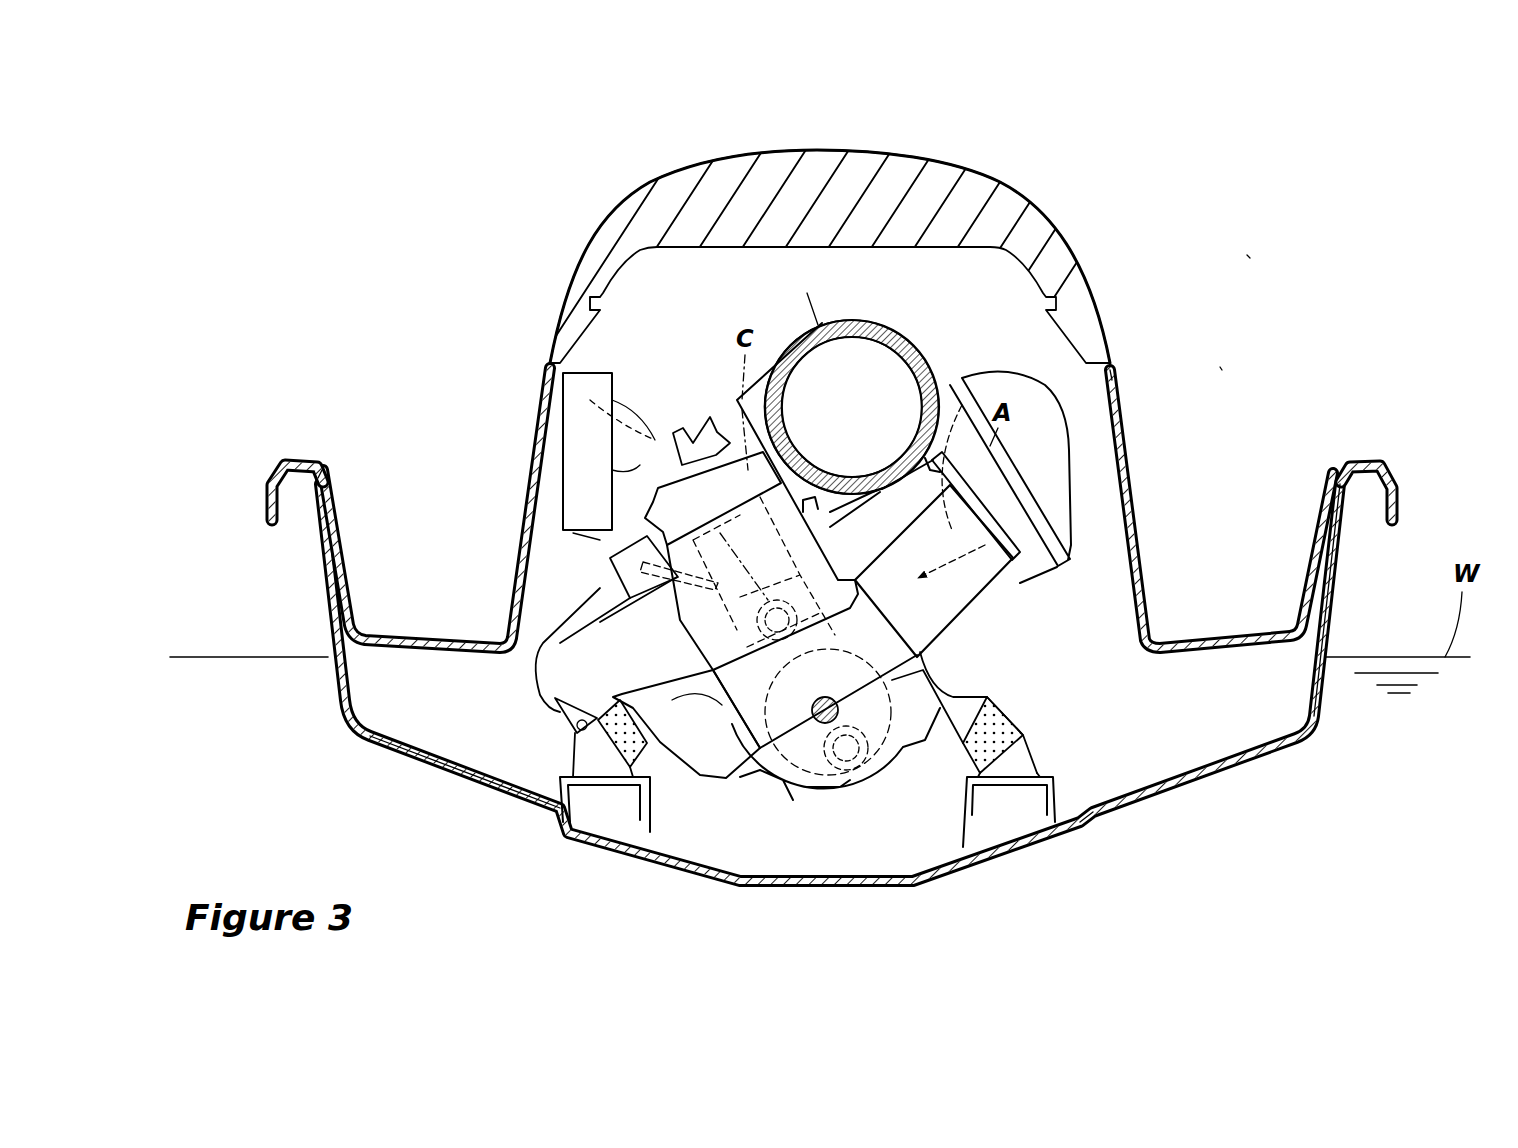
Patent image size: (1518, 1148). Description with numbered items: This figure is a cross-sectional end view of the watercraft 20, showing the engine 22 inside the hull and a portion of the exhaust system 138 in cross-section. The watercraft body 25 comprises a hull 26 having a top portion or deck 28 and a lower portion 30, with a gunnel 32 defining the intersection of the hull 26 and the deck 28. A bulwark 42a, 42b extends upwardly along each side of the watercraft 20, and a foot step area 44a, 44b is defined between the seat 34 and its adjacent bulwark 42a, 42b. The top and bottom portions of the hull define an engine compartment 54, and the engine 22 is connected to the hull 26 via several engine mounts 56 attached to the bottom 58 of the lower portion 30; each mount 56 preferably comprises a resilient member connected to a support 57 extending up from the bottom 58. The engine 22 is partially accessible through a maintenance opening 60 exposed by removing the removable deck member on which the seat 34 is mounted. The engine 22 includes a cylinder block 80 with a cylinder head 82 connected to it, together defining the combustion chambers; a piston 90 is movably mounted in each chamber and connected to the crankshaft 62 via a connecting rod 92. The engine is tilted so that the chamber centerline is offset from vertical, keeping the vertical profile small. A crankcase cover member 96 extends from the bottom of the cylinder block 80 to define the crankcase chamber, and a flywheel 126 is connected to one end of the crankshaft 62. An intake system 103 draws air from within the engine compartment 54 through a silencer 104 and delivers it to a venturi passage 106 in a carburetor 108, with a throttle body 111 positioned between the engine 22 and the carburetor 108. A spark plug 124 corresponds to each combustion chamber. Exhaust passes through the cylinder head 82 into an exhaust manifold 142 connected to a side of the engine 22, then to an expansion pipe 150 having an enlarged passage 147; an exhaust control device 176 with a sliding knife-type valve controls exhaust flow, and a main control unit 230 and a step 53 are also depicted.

The watercraft 20 is at (1247, 257).
The engine 22 is at (653, 486).
The watercraft body 25 is at (1220, 368).
The hull 26 is at (1111, 379).
The deck 28 is at (545, 450).
The lower portion 30 is at (1338, 578).
The gunnel 32 is at (262, 492).
The seat 34 is at (1025, 225).
The bulwark 42a is at (346, 472).
The bulwark 42b is at (1324, 456).
The foot step area 44a is at (400, 630).
The foot step area 44b is at (1228, 632).
The step 53 is at (645, 283).
The engine compartment 54 is at (455, 706).
The engine mounts 56 is at (1020, 752).
The support 57 is at (1080, 812).
The bottom 58 is at (402, 760).
The maintenance opening 60 is at (683, 268).
The crankshaft 62 is at (790, 772).
The cylinder block 80 is at (790, 500).
The cylinder head 82 is at (573, 533).
The piston 90 is at (740, 638).
The connecting rod 92 is at (745, 735).
The crankcase cover member 96 is at (867, 777).
The intake system 103 is at (987, 645).
The silencer 104 is at (1047, 443).
The venturi passage 106 is at (1073, 543).
The carburetor 108 is at (990, 596).
The throttle body 111 is at (917, 608).
The spark plug 124 is at (683, 430).
The flywheel 126 is at (845, 760).
The exhaust system 138 is at (860, 320).
The exhaust manifold 142 is at (550, 683).
The enlarged passage 147 is at (895, 373).
The expansion pipe 150 is at (818, 325).
The exhaust control device 176 is at (620, 599).
The main control unit 230 is at (583, 400).